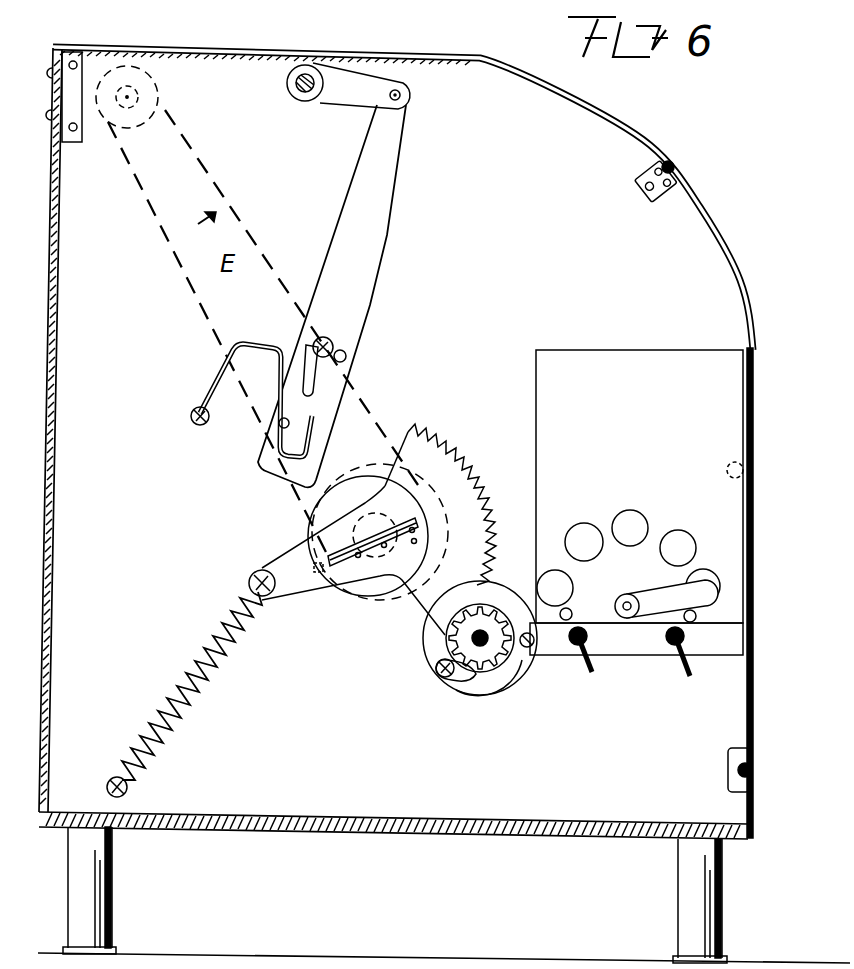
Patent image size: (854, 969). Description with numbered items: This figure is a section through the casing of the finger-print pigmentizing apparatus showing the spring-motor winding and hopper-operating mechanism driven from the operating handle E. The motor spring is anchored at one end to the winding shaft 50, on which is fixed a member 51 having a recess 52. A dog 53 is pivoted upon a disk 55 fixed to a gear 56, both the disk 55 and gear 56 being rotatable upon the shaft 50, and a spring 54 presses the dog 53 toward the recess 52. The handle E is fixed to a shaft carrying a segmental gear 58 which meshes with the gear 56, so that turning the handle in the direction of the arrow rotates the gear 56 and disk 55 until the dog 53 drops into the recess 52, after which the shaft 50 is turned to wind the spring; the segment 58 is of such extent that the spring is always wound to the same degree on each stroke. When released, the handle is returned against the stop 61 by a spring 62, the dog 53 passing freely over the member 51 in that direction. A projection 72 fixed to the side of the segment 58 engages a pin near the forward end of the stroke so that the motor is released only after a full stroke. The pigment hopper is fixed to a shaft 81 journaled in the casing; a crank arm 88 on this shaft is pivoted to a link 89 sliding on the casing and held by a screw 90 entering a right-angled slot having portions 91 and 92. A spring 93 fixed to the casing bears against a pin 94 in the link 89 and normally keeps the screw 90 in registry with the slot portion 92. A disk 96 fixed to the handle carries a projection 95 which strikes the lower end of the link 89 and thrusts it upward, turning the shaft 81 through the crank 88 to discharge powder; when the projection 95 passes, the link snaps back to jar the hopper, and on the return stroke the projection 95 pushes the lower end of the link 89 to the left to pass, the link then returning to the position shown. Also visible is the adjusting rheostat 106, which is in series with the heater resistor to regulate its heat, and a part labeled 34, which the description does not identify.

The plate 34 is at (385, 518).
The winding shaft 50 is at (460, 645).
The member 51 is at (488, 622).
The recess 52 is at (488, 684).
The dog 53 is at (462, 680).
The spring 54 is at (532, 662).
The disk 55 is at (437, 670).
The gear 56 is at (453, 628).
The segmental gear 58 is at (497, 510).
The stop 61 is at (138, 200).
The spring 62 is at (170, 728).
The projection 72 is at (330, 548).
The shaft 81 is at (287, 85).
The crank arm 88 is at (361, 86).
The link 89 is at (332, 296).
The screw 90 is at (326, 340).
The slot portion 91 is at (346, 356).
The slot portion 92 is at (312, 383).
The spring 93 is at (225, 381).
The pin 94 is at (277, 426).
The projection 95 is at (318, 573).
The disk 96 is at (352, 478).
The adjusting rheostat 106 is at (636, 513).